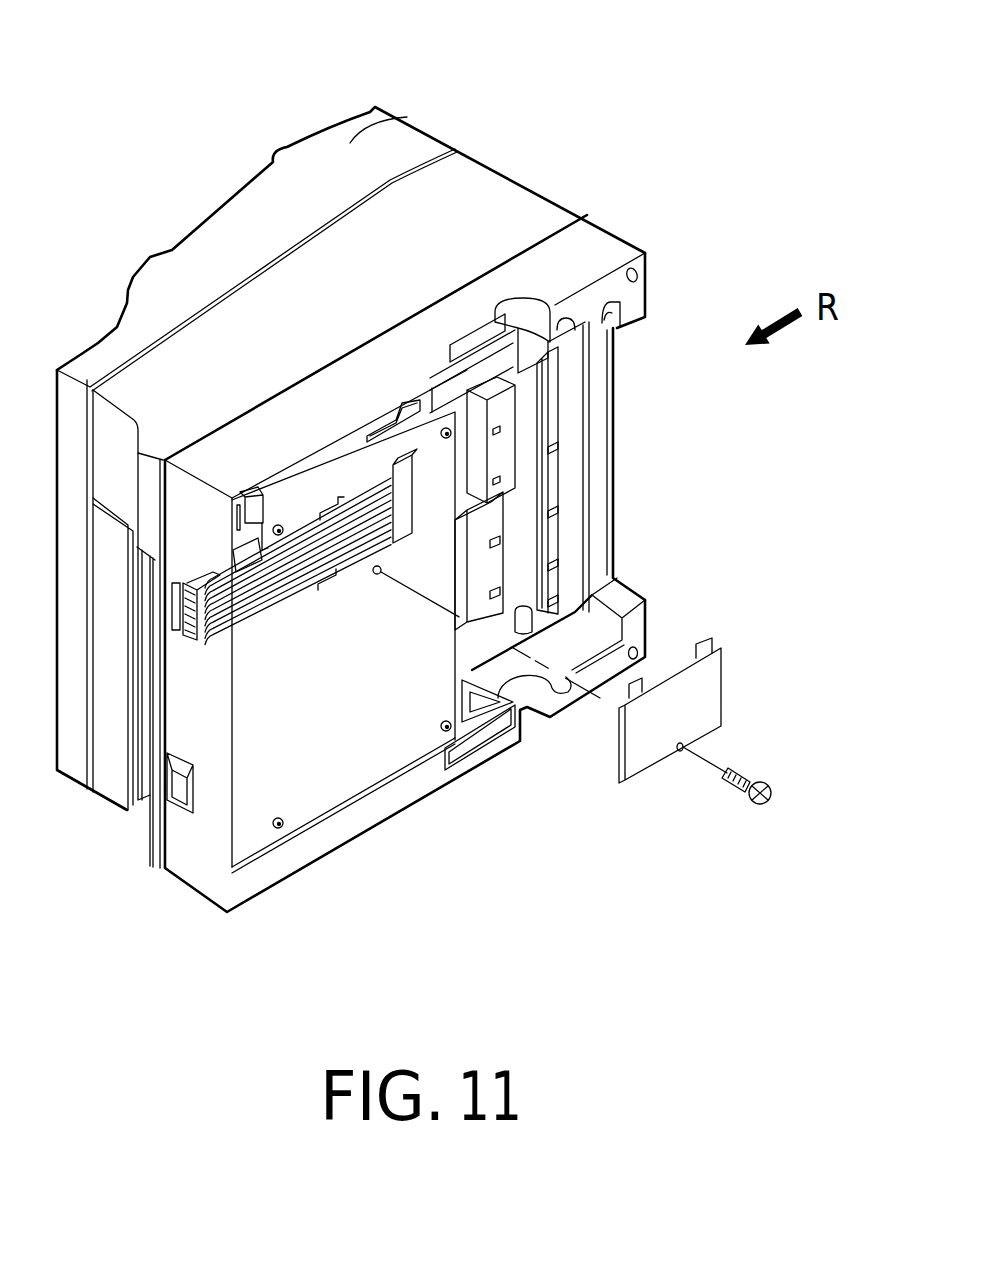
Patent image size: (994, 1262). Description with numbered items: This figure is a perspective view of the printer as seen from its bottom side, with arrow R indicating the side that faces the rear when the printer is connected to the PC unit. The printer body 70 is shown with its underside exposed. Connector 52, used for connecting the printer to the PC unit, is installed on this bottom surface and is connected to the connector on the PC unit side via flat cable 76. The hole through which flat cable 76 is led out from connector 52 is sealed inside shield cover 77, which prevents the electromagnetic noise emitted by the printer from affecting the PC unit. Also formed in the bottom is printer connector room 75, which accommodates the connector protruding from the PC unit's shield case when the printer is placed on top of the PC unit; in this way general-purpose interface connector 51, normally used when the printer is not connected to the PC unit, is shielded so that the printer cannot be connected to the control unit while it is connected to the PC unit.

The housing cover 70 is at (393, 117).
The printer connector room 75 is at (573, 478).
The flat cable 76 is at (287, 593).
The connector 52 is at (452, 468).
The general-purpose interface connector 51 is at (376, 576).
The shield cover 77 is at (647, 757).